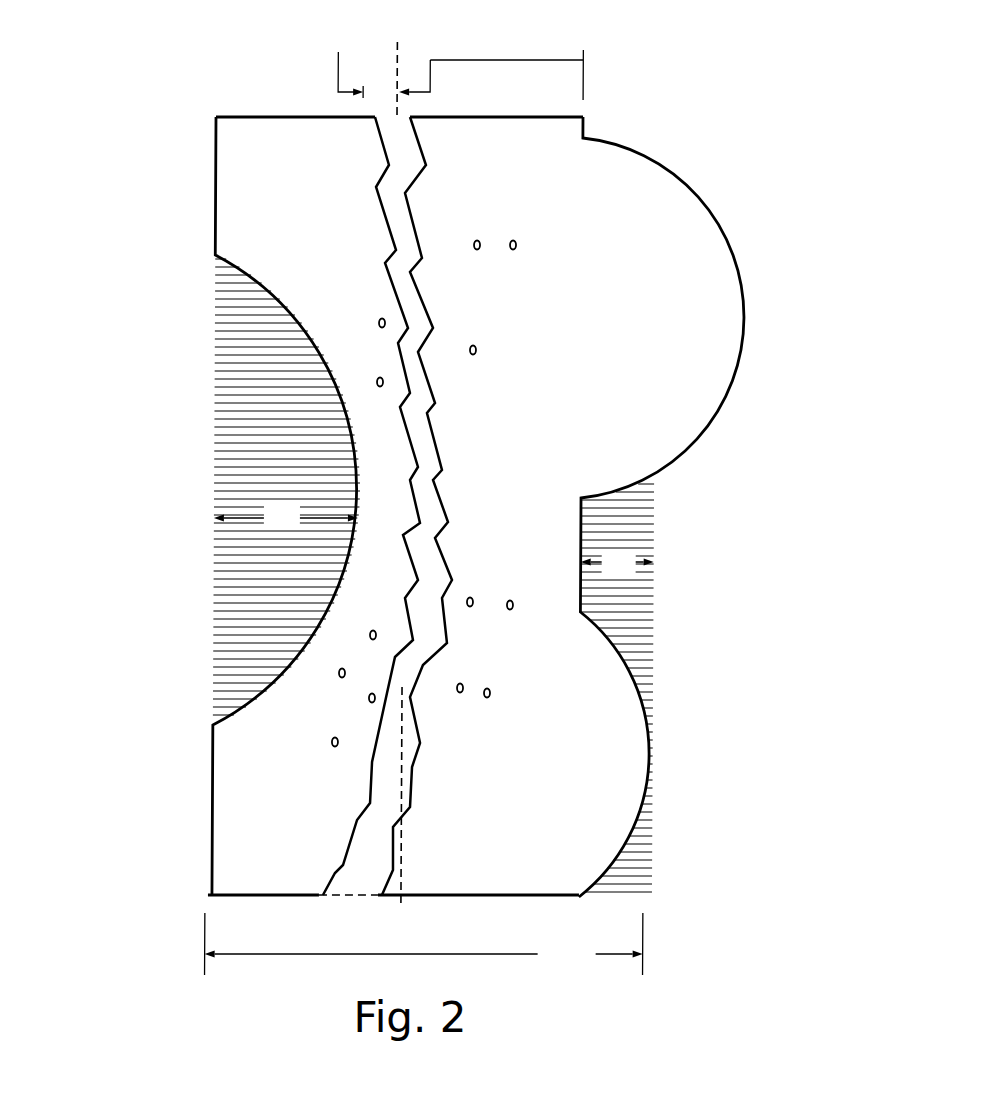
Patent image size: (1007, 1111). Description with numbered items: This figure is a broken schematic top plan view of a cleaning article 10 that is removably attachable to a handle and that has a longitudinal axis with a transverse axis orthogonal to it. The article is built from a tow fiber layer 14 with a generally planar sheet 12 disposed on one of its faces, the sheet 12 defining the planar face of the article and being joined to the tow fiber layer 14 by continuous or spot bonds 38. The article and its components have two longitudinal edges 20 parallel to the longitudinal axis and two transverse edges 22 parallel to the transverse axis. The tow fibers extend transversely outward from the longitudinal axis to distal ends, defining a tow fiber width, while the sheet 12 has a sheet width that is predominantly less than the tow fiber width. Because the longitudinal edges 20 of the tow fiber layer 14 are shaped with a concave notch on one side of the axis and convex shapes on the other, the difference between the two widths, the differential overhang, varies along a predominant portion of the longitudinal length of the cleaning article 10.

The cleaning article 10 is at (140, 763).
The generally planar sheet 12 is at (273, 216).
The tow fiber layer 14 is at (252, 624).
The longitudinal edges 20 is at (216, 199).
The transverse edges 22 is at (289, 117).
The bonds 38 is at (512, 239).